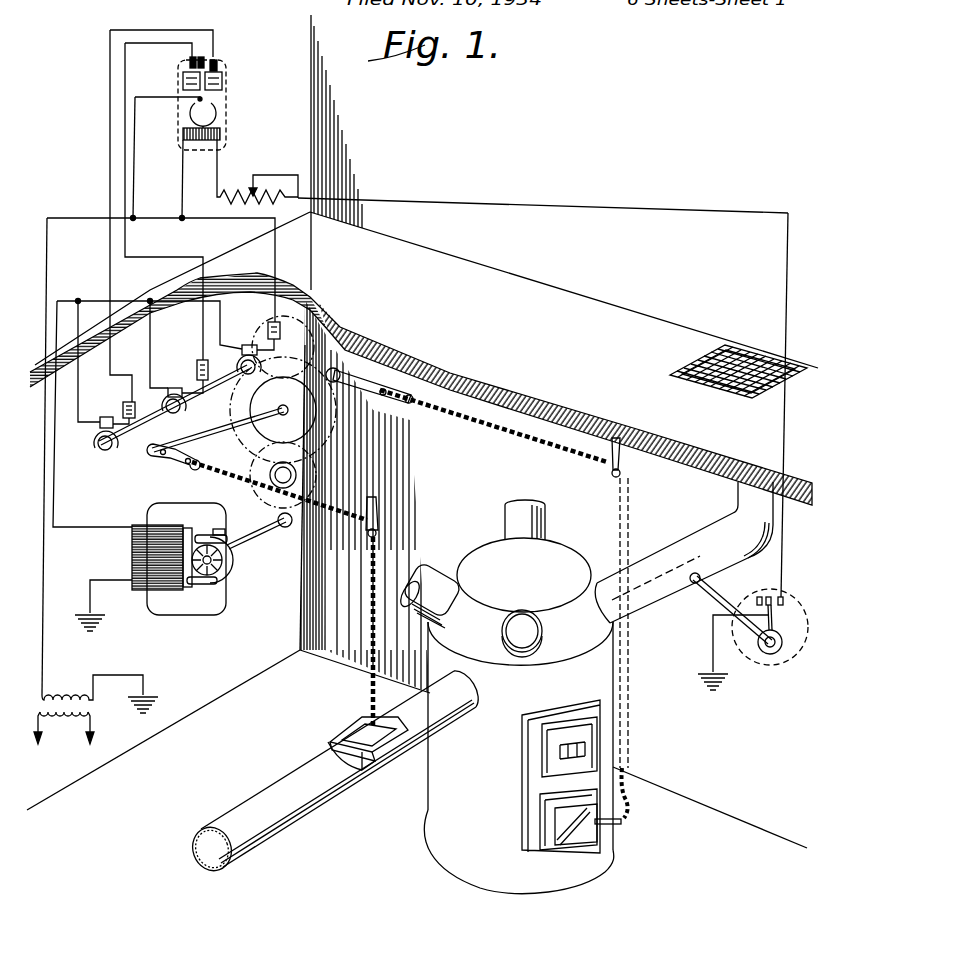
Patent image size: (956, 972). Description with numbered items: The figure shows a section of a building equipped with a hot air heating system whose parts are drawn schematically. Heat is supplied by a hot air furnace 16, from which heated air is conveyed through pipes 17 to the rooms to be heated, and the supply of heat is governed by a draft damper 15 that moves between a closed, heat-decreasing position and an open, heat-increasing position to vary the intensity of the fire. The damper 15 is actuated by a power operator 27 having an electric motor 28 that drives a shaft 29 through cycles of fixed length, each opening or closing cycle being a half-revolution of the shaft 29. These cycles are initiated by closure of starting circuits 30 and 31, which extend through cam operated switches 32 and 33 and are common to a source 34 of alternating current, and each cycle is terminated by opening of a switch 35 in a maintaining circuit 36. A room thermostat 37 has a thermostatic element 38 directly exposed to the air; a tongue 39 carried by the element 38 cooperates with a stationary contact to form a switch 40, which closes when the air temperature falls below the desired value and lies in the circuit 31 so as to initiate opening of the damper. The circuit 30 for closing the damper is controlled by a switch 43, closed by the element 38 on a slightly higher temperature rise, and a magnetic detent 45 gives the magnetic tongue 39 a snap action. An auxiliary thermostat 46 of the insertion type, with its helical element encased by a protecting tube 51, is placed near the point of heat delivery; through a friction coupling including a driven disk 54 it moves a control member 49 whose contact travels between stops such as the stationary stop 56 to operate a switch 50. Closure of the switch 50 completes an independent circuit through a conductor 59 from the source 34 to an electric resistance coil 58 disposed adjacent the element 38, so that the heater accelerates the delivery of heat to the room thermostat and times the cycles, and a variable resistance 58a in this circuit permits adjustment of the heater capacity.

The draft damper 15 is at (587, 831).
The hot air furnace 16 is at (443, 792).
The pipes 17 is at (514, 517).
The power operator 27 is at (242, 595).
The electric motor 28 is at (152, 512).
The shaft 29 is at (140, 445).
The starting circuit 30 is at (150, 257).
The starting circuit 31 is at (109, 277).
The cam operated switch 32 is at (195, 388).
The cam operated switch 33 is at (122, 410).
The source of alternating current 34 is at (58, 695).
The switch 35 is at (262, 342).
The maintaining circuit 36 is at (55, 480).
The thermostat 37 is at (230, 88).
The thermostatic element 38 is at (212, 108).
The tongue 39 is at (198, 97).
The switch 40 is at (215, 60).
The switch 43 is at (196, 57).
The magnetic detent 45 is at (222, 80).
The auxiliary thermostat 46 is at (764, 670).
The control member 49 is at (784, 597).
The switch 50 is at (768, 597).
The protecting tube 51 is at (712, 602).
The driven disk 54 is at (779, 652).
The stationary stop 56 is at (759, 597).
The electric resistance coil 58 is at (221, 133).
The variable resistance 58a is at (250, 188).
The conductor 59 is at (537, 213).